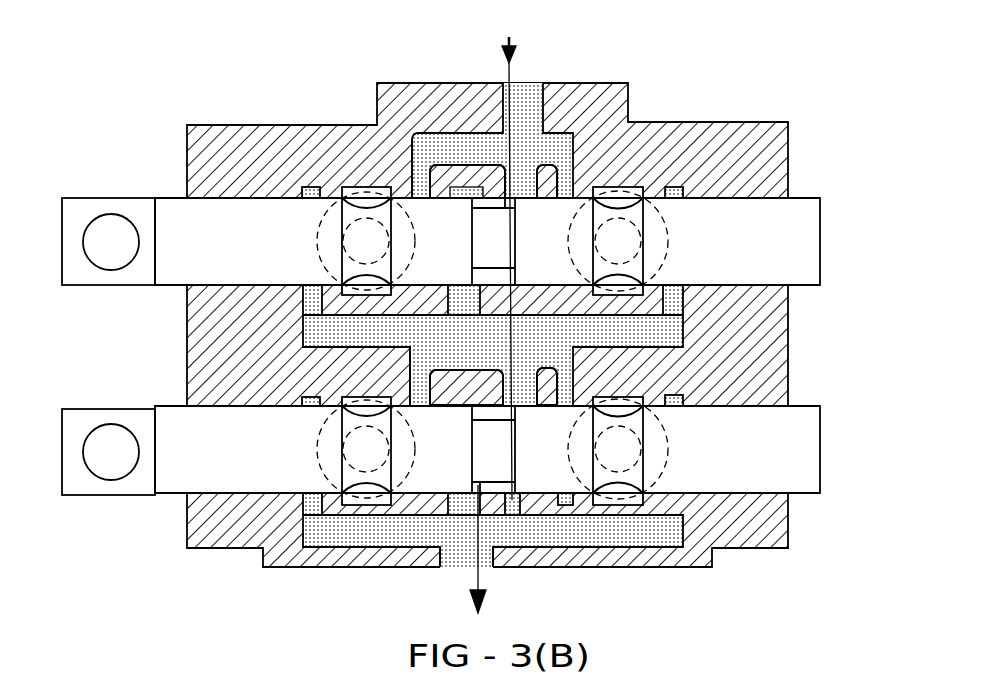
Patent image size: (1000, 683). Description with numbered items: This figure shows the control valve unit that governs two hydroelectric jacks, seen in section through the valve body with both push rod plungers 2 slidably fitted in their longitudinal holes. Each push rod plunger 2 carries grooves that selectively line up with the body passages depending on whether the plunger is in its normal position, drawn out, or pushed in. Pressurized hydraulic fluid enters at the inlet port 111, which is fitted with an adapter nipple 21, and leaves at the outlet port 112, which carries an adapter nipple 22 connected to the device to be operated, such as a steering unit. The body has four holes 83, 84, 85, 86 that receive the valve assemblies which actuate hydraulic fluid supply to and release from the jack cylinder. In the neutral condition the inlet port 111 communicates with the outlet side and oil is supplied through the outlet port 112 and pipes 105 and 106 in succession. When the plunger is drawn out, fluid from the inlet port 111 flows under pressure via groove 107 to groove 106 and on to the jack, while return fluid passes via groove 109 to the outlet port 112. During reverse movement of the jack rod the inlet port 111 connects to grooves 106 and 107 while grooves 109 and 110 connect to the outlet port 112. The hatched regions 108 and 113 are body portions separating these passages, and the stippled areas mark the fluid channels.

The push rod plunger 2 is at (441, 315).
The adapter nipple 21 is at (515, 258).
The adapter nipple 22 is at (481, 561).
The hole 83 is at (649, 168).
The hole 84 is at (623, 520).
The hole 85 is at (314, 526).
The hole 86 is at (314, 164).
The pipe 105 is at (274, 344).
The groove 106 is at (331, 346).
The groove 107 is at (369, 332).
The valve body insert 108 is at (430, 330).
The groove 109 is at (627, 318).
The groove 110 is at (704, 343).
The inlet port 111 is at (507, 322).
The outlet port 112 is at (454, 577).
The valve body insert 113 is at (585, 331).